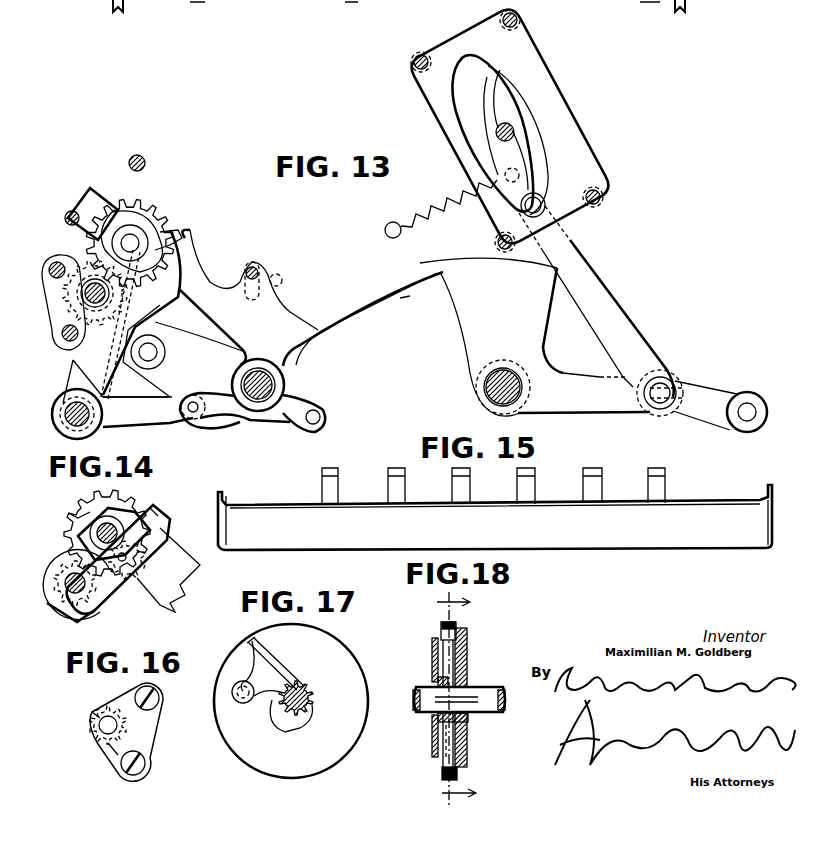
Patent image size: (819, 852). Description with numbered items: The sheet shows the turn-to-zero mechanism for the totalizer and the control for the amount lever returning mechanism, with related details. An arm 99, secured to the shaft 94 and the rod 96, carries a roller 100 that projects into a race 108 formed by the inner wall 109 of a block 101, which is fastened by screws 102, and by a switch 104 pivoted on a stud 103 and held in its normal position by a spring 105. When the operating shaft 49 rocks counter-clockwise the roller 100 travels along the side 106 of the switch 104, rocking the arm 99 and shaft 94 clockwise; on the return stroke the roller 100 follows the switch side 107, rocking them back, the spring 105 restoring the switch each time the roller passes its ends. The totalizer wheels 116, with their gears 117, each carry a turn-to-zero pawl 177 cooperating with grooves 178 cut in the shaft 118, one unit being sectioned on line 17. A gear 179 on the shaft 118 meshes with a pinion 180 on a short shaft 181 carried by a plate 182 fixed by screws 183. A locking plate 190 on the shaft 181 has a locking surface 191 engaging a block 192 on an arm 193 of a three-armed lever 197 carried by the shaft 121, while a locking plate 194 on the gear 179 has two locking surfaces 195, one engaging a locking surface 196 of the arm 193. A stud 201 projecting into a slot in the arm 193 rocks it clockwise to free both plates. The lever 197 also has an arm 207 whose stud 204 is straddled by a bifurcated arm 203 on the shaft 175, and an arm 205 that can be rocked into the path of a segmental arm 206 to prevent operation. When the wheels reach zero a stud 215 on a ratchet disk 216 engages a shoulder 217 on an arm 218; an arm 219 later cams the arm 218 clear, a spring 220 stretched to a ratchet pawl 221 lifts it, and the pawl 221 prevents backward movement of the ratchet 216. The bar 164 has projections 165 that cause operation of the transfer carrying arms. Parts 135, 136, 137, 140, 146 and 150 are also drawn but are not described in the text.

In FIG. 18, the section line 17 is at (456, 699).
In FIG. 13, the operating shaft 49 is at (510, 373).
In FIG. 13, the shaft 94 is at (670, 402).
In FIG. 13, the rod 96 is at (738, 410).
In FIG. 13, the arm 99 is at (623, 328).
In FIG. 13, the roller 100 is at (545, 180).
In FIG. 13, the block 101 is at (570, 127).
In FIG. 13, the screws 102 is at (505, 22).
In FIG. 13, the stud 103 is at (514, 114).
In FIG. 13, the switch 104 is at (502, 70).
In FIG. 13, the spring 105 is at (431, 192).
In FIG. 13, the switch side 106 is at (530, 160).
In FIG. 13, the switch side 107 is at (487, 80).
In FIG. 13, the race 108 is at (530, 104).
In FIG. 13, the inner wall 109 is at (466, 58).
In FIG. 17, the totalizer wheels 116 is at (335, 640).
In FIG. 18, the totalizer wheels 116 is at (455, 622).
In FIG. 18, the gears 117 is at (433, 747).
In FIG. 13, the shaft 118 is at (121, 243).
In FIG. 14, the shaft 118 is at (90, 531).
In FIG. 17, the shaft 118 is at (312, 692).
In FIG. 18, the shaft 118 is at (473, 690).
In FIG. 13, the shaft 121 is at (256, 372).
In FIG. 13, the screw 135 is at (65, 218).
In FIG. 13, the screw 136 is at (145, 163).
In FIG. 13, the bar 137 is at (90, 198).
In FIG. 18, the hub 140 is at (468, 731).
In FIG. 13, the stud 146 is at (306, 417).
In FIG. 13, the roller 150 is at (156, 360).
In FIG. 15, the bar 164 is at (640, 545).
In FIG. 15, the projections 165 is at (388, 474).
In FIG. 13, the shaft 175 is at (60, 413).
In FIG. 17, the turn-to-zero pawl 177 is at (272, 655).
In FIG. 18, the turn-to-zero pawl 177 is at (462, 652).
In FIG. 17, the grooves 178 is at (294, 720).
In FIG. 13, the gear 179 is at (163, 230).
In FIG. 14, the gear 179 is at (78, 518).
In FIG. 14, the pinion 180 is at (55, 606).
In FIG. 16, the pinion 180 is at (92, 712).
In FIG. 13, the short shaft 181 is at (86, 266).
In FIG. 14, the short shaft 181 is at (62, 583).
In FIG. 16, the short shaft 181 is at (100, 727).
In FIG. 13, the plate 182 is at (48, 271).
In FIG. 16, the plate 182 is at (118, 754).
In FIG. 16, the screws 183 is at (138, 690).
In FIG. 14, the locking plate 190 is at (52, 564).
In FIG. 14, the locking surface 191 is at (88, 610).
In FIG. 14, the block 192 is at (118, 582).
In FIG. 13, the arm 193 is at (206, 274).
In FIG. 14, the arm 193 is at (172, 596).
In FIG. 13, the locking plate 194 is at (145, 212).
In FIG. 14, the locking plate 194 is at (122, 505).
In FIG. 14, the locking surfaces 195 is at (86, 512).
In FIG. 13, the locking surface 196 is at (192, 232).
In FIG. 14, the locking surface 196 is at (146, 518).
In FIG. 13, the three-armed lever 197 is at (298, 346).
In FIG. 13, the stud 201 is at (244, 287).
In FIG. 13, the arm 203 is at (126, 425).
In FIG. 13, the stud 204 is at (198, 407).
In FIG. 13, the arm 205 is at (352, 296).
In FIG. 13, the segmental arm 206 is at (462, 322).
In FIG. 13, the arm 207 is at (212, 420).
In FIG. 13, the stud 215 is at (127, 298).
In FIG. 13, the ratchet disk 216 is at (66, 296).
In FIG. 13, the shoulder 217 is at (104, 318).
In FIG. 13, the arm 218 is at (112, 358).
In FIG. 13, the arm 219 is at (152, 224).
In FIG. 13, the spring 220 is at (104, 397).
In FIG. 13, the ratchet pawl 221 is at (60, 330).